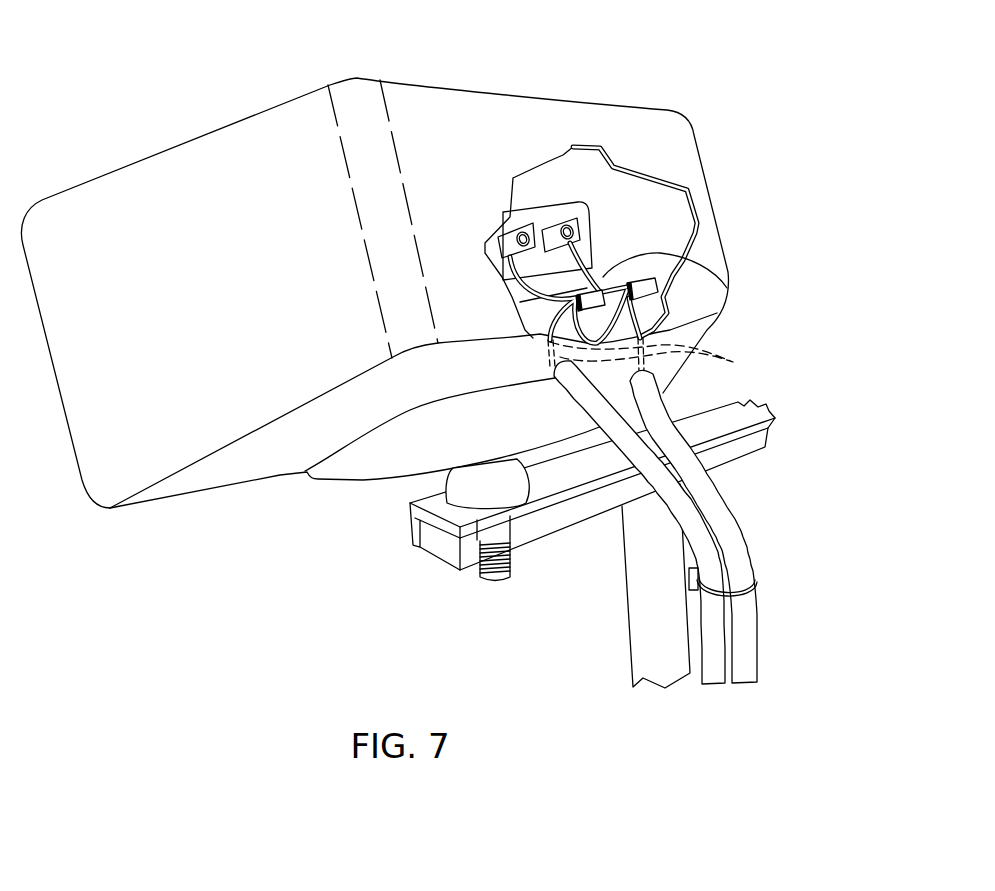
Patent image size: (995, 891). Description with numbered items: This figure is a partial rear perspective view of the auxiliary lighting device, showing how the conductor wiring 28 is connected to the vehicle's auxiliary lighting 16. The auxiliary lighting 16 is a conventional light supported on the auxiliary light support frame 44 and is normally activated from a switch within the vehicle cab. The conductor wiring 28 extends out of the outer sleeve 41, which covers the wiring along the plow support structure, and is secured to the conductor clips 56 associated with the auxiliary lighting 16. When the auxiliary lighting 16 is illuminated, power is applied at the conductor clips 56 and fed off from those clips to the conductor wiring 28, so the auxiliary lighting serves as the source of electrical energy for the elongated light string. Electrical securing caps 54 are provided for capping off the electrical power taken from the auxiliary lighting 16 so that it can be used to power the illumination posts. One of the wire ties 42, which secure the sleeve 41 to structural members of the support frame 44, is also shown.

The auxiliary lighting 16 is at (638, 96).
The conductor clips 56 is at (550, 230).
The electrical securing caps 54 is at (604, 296).
The conductor wiring 28 is at (728, 362).
The outer sleeve 41 is at (733, 533).
The wire ties 42 is at (757, 587).
The auxiliary light support frame 44 is at (605, 598).